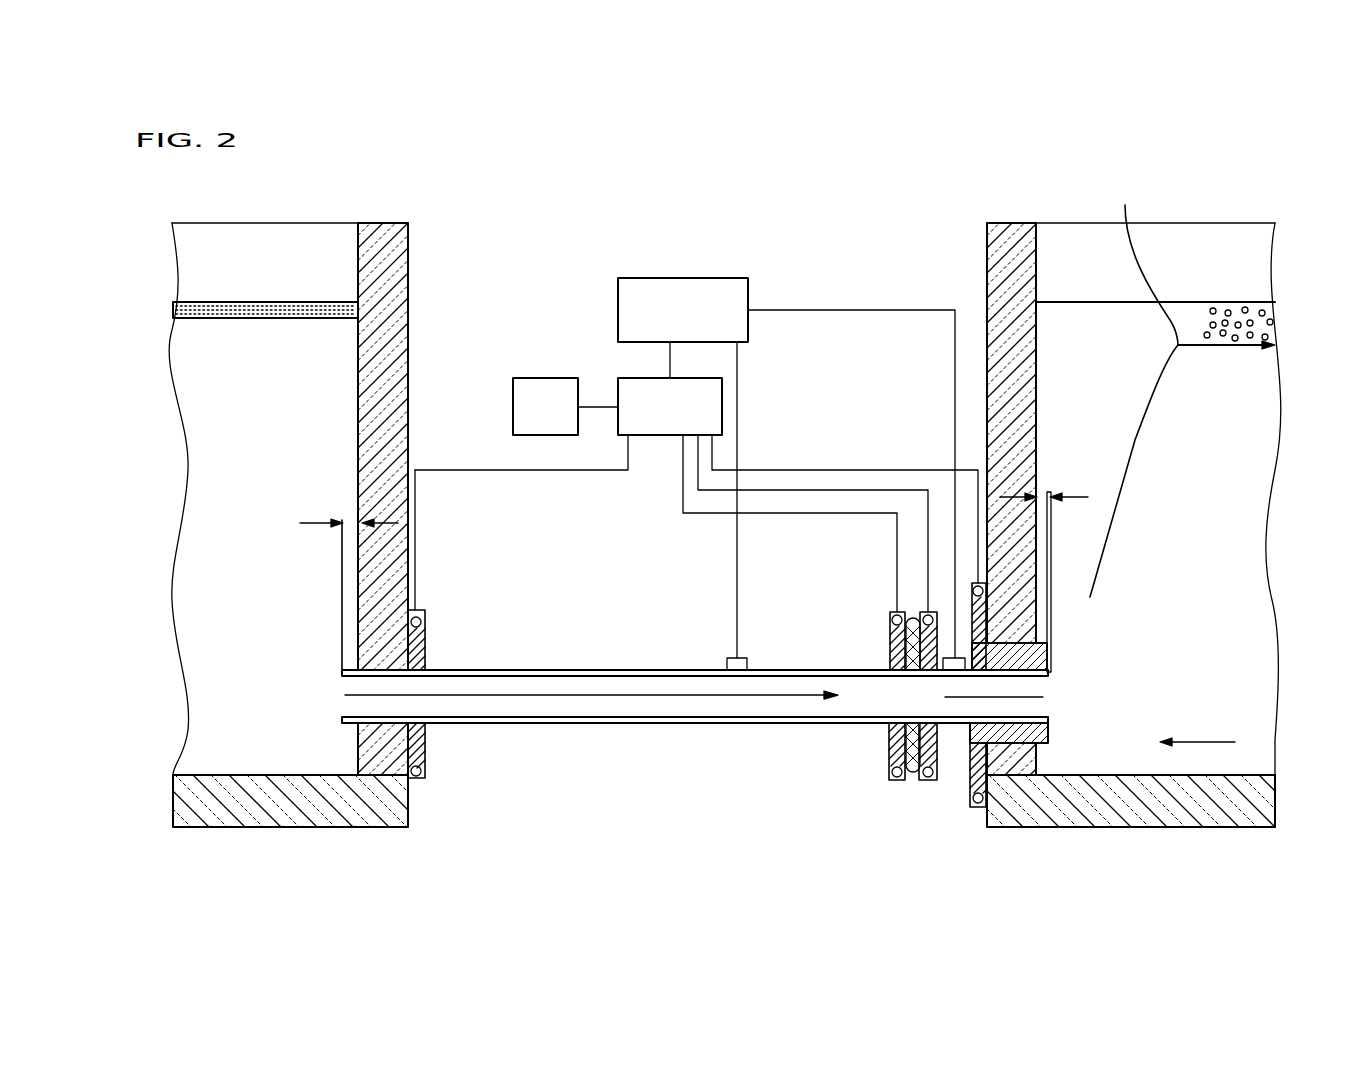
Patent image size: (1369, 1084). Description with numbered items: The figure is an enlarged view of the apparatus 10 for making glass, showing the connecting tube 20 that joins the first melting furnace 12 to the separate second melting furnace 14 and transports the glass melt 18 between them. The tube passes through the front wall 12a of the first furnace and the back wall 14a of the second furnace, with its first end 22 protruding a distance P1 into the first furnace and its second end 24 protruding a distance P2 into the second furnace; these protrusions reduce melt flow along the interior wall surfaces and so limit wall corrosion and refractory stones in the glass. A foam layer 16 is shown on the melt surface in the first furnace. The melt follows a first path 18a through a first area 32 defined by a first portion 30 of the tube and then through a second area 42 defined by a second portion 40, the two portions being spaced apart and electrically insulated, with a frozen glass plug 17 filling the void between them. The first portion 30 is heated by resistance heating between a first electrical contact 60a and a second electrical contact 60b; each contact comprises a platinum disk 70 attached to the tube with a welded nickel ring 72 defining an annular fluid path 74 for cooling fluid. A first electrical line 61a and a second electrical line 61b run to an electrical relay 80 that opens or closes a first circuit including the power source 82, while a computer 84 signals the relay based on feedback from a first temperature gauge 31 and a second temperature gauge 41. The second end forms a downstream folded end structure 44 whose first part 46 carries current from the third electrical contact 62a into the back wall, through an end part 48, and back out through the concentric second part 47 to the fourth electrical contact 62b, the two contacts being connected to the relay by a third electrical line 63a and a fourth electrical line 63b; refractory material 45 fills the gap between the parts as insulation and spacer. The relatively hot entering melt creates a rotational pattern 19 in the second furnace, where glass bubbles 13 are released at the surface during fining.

The apparatus for making glass 10 is at (815, 215).
The first melting furnace 12 is at (722, 529).
The front wall 12a is at (410, 240).
The glass bubbles 13 is at (1212, 305).
The second melting furnace 14 is at (1089, 531).
The back wall 14a is at (987, 250).
The foam layer 16 is at (262, 304).
The glass plug 17 is at (910, 624).
The glass melt 18 is at (218, 432).
The first path 18a is at (568, 670).
The rotational pattern 19 is at (1134, 387).
The connecting tube 20 is at (725, 778).
The first end 22 is at (345, 712).
The second end 24 is at (1055, 718).
The first portion 30 is at (620, 725).
The first temperature gauge 31 is at (735, 660).
The first area 32 is at (600, 670).
The second portion 40 is at (953, 782).
The second temperature gauge 41 is at (898, 665).
The second area 42 is at (920, 697).
The downstream folded end structure 44 is at (1058, 628).
The refractory material 45 is at (1084, 612).
The first part 46 is at (1030, 693).
The second part 47 is at (1038, 558).
The end part 48 is at (1048, 742).
The first electrical contact 60a is at (418, 780).
The second electrical contact 60b is at (897, 782).
The first electrical line 61a is at (462, 470).
The second electrical line 61b is at (830, 513).
The third electrical contact 62a is at (928, 782).
The fourth electrical contact 62b is at (978, 808).
The third electrical line 63a is at (800, 490).
The fourth electrical line 63b is at (882, 470).
The platinum disk 70 is at (469, 625).
The nickel ring 72 is at (425, 612).
The annular fluid path 74 is at (422, 630).
The electrical relay 80 is at (722, 420).
The power source 82 is at (553, 378).
The computer 84 is at (680, 278).
The protrusion distance P1 is at (320, 520).
The protrusion distance P2 is at (1080, 497).